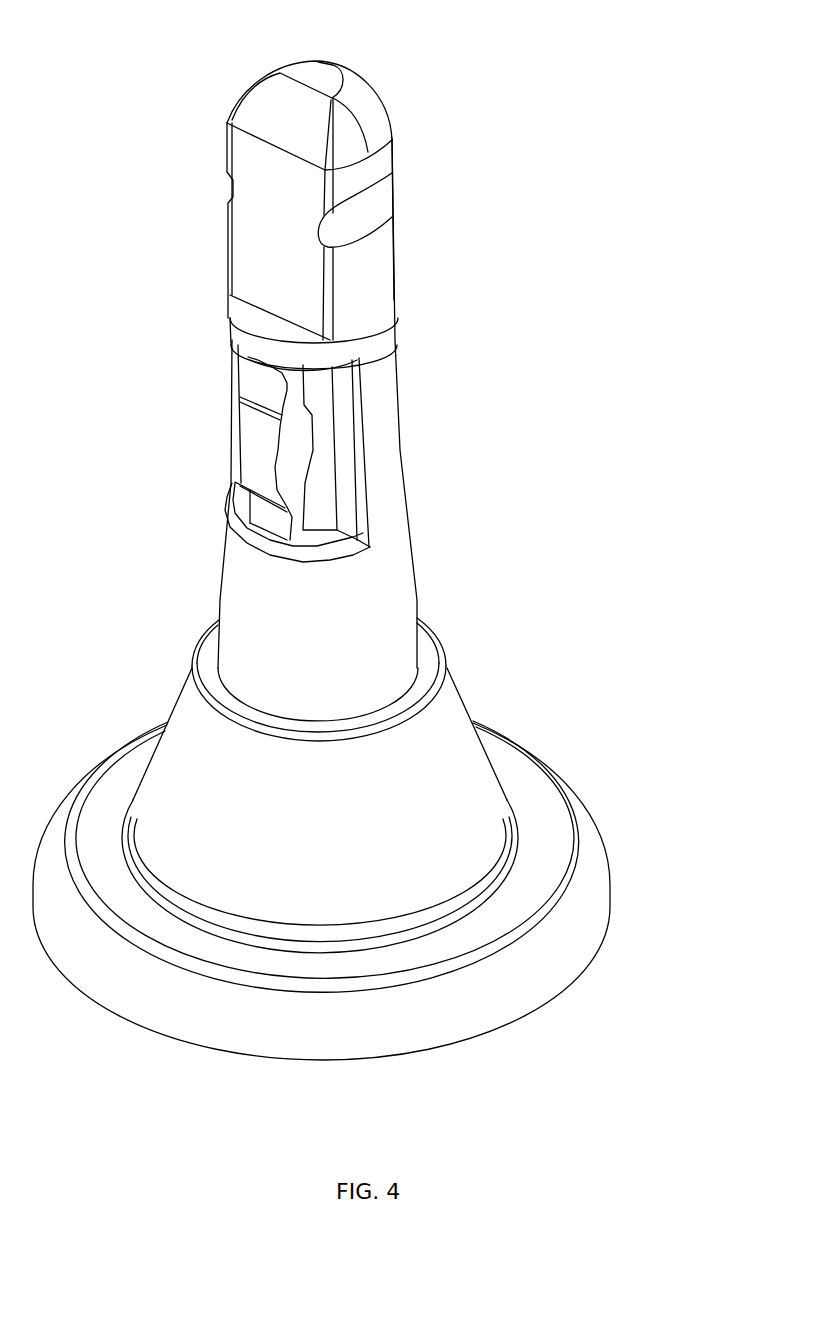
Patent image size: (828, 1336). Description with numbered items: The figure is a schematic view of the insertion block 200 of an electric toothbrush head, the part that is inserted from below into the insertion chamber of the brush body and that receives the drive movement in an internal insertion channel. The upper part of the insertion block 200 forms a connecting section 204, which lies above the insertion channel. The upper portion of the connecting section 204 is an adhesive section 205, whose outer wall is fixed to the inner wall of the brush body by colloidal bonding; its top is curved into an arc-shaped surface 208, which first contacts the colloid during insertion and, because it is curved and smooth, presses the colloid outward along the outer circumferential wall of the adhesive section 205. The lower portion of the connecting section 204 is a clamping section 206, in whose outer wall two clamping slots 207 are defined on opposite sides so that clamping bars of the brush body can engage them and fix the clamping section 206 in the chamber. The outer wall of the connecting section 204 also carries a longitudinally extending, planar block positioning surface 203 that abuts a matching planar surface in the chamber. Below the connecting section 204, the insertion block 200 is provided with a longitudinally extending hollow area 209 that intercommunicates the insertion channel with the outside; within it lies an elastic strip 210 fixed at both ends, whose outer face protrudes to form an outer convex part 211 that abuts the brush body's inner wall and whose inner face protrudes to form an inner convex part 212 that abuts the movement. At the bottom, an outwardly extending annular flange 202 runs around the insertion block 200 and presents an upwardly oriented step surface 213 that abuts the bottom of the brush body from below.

The insertion block 200 is at (448, 611).
The annular flange 202 is at (587, 882).
The block positioning surface 203 is at (258, 231).
The connecting section 204 is at (200, 199).
The adhesive section 205 is at (383, 153).
The clamping section 206 is at (378, 263).
The clamping slot 207 is at (365, 208).
The arc-shaped surface 208 is at (357, 97).
The hollow area 209 is at (322, 447).
The elastic strip 210 is at (212, 457).
The outer convex part 211 is at (250, 437).
The inner convex part 212 is at (307, 423).
The step surface 213 is at (518, 773).